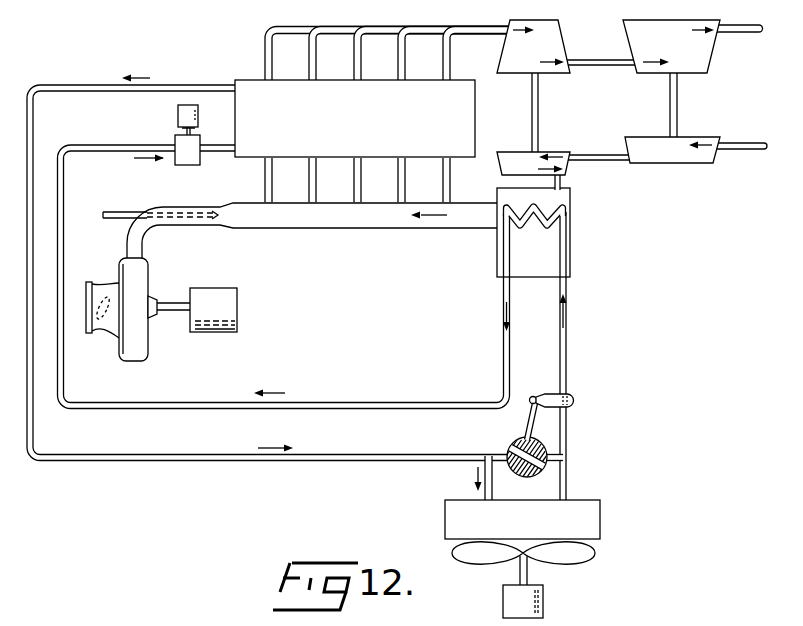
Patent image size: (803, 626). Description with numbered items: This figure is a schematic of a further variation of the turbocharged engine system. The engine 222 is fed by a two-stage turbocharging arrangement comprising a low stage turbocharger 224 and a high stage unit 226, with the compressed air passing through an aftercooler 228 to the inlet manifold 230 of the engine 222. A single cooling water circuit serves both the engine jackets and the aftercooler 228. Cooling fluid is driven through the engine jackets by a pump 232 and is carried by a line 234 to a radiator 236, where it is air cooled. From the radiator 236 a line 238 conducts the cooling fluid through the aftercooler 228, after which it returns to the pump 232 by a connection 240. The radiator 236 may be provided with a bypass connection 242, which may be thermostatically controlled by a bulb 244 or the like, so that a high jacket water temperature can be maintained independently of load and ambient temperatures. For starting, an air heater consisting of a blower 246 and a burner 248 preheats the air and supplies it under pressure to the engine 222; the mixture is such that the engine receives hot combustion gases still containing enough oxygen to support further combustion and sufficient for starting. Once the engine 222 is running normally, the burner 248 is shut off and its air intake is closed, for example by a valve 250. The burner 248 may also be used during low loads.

The engine 222 is at (251, 79).
The low stage turbocharger 224 is at (685, 82).
The high stage unit 226 is at (551, 81).
The aftercooler 228 is at (572, 253).
The inlet manifold 230 is at (362, 231).
The pump 232 is at (175, 136).
The line 234 is at (175, 462).
The radiator 236 is at (602, 518).
The line 238 is at (563, 352).
The connection 240 is at (382, 386).
The bypass connection 242 is at (508, 440).
The bulb 244 is at (572, 402).
The blower 246 is at (143, 358).
The burner 248 is at (128, 192).
The valve 250 is at (110, 292).